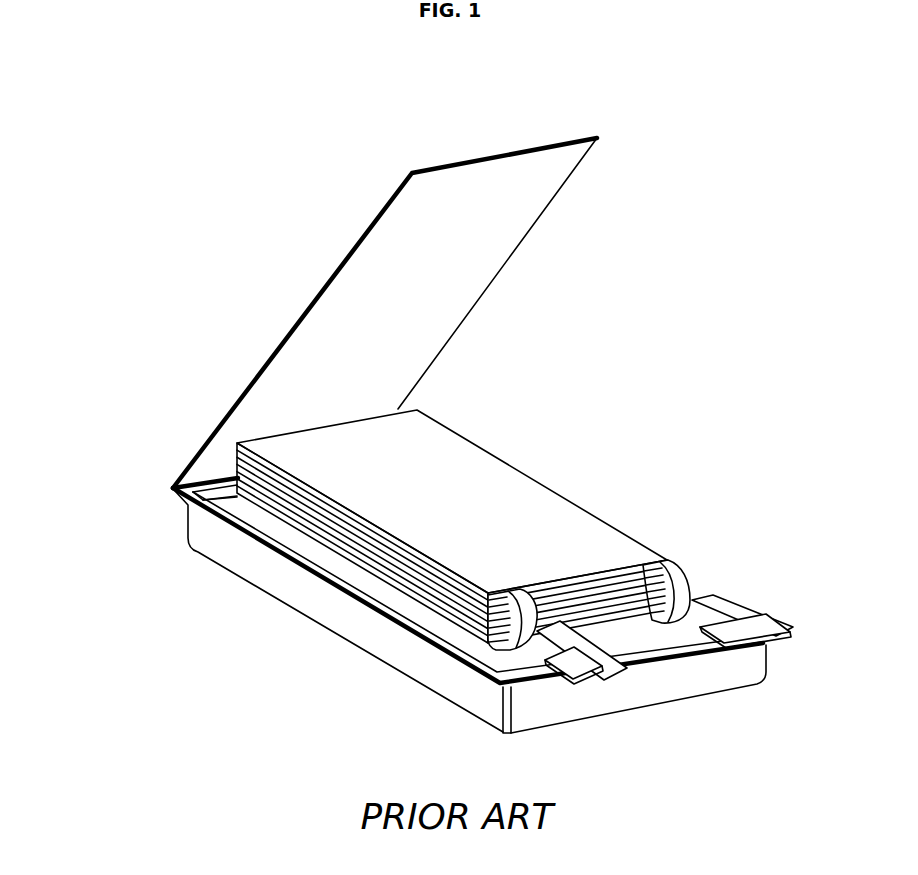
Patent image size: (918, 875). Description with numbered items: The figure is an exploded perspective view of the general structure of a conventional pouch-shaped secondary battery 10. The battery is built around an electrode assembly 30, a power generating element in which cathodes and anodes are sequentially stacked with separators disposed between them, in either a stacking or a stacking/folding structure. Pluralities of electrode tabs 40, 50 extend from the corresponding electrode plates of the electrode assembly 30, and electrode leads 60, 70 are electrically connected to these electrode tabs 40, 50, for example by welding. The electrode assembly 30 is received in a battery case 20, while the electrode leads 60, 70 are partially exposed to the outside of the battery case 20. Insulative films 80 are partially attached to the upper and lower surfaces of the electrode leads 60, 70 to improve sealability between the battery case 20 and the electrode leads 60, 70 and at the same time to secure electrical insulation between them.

The pouch-shaped secondary battery 10 is at (82, 125).
The battery case 20 is at (173, 490).
The electrode assembly 30 is at (543, 438).
The electrode tab 40 is at (452, 633).
The electrode tab 50 is at (690, 574).
The electrode lead 60 is at (484, 690).
The electrode lead 70 is at (740, 602).
The insulative film 80 is at (552, 690).